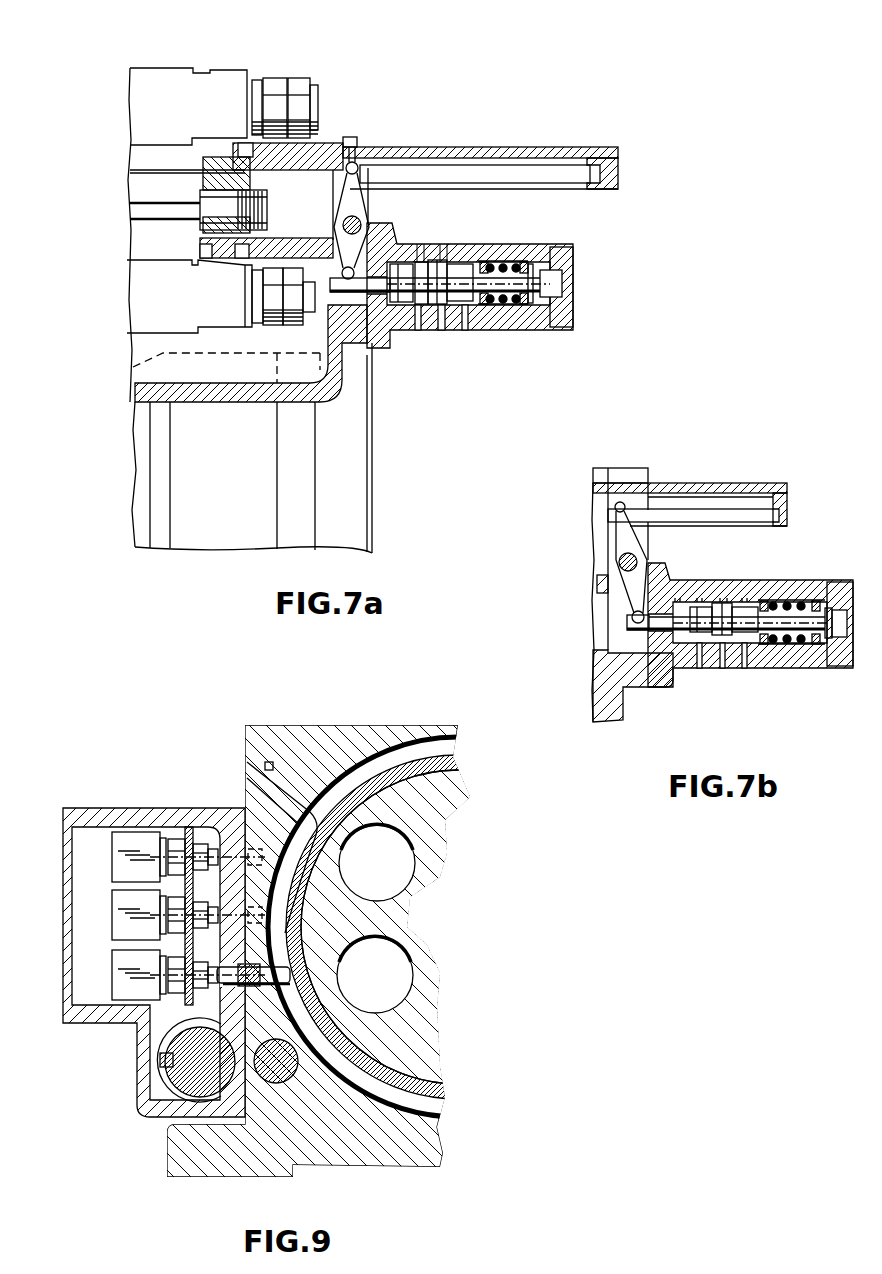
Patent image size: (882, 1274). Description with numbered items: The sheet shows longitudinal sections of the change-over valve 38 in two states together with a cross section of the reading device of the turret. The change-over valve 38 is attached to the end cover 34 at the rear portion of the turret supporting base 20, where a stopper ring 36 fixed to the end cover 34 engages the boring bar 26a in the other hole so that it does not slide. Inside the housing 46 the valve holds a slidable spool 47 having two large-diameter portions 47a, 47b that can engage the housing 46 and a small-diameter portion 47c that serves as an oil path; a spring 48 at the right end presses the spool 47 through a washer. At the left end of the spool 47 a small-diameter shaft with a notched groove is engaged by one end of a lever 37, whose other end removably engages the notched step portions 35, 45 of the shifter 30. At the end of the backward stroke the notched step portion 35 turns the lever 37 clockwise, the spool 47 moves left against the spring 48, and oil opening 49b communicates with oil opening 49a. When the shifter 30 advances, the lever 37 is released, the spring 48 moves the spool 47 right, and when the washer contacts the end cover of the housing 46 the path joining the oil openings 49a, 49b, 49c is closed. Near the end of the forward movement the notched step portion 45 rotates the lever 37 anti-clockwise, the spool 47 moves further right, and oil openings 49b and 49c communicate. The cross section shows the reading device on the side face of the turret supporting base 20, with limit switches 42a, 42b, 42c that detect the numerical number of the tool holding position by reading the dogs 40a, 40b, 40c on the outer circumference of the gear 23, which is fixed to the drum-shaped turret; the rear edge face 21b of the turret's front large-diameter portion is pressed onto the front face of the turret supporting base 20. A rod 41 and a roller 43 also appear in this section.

In FIG. 9, the turret supporting base 20 is at (305, 752).
In FIG. 9, the rear edge face 21b is at (452, 790).
In FIG. 9, the gear 23 is at (387, 773).
In FIG. 7A, the inside diameter cutting tool (boring bar) 26a is at (178, 94).
In FIG. 7A, the shifter 30 is at (423, 147).
In FIG. 7B, the shifter 30 is at (697, 483).
In FIG. 7A, the end cover 34 is at (212, 390).
In FIG. 7B, the end cover 34 is at (610, 723).
In FIG. 7A, the notched step portion 35 is at (351, 137).
In FIG. 7A, the stopper ring 36 is at (289, 237).
In FIG. 7B, the lever 37 is at (616, 545).
In FIG. 7A, the change-over valve 38 is at (620, 300).
In FIG. 7B, the change-over valve 38 is at (845, 705).
In FIG. 9, the dog 40a is at (302, 933).
In FIG. 9, the dog 40b is at (245, 837).
In FIG. 9, the dog 40c is at (262, 766).
In FIG. 9, the actuating rod 41 is at (240, 994).
In FIG. 9, the limit switch 42a is at (115, 975).
In FIG. 9, the limit switch 42b is at (115, 912).
In FIG. 9, the limit switch 42c is at (142, 850).
In FIG. 9, the roller 43 is at (193, 1123).
In FIG. 7A, the notched step portion 45 is at (589, 170).
In FIG. 7B, the notched step portion 45 is at (767, 510).
In FIG. 7A, the housing 46 is at (537, 248).
In FIG. 7B, the housing 46 is at (710, 600).
In FIG. 7A, the spool 47 is at (370, 280).
In FIG. 7B, the spool 47 is at (663, 680).
In FIG. 7A, the large-diameter portion 47a is at (407, 265).
In FIG. 7A, the large-diameter portion 47b is at (467, 268).
In FIG. 7A, the small-diameter portion 47c is at (440, 306).
In FIG. 7A, the spring 48 is at (537, 330).
In FIG. 7B, the spring 48 is at (810, 582).
In FIG. 7A, the oil opening 49a is at (418, 330).
In FIG. 7B, the oil opening 49a is at (699, 668).
In FIG. 7A, the oil opening 49b is at (463, 324).
In FIG. 7B, the oil opening 49b is at (723, 668).
In FIG. 7A, the oil opening 49c is at (485, 330).
In FIG. 7B, the oil opening 49c is at (747, 668).